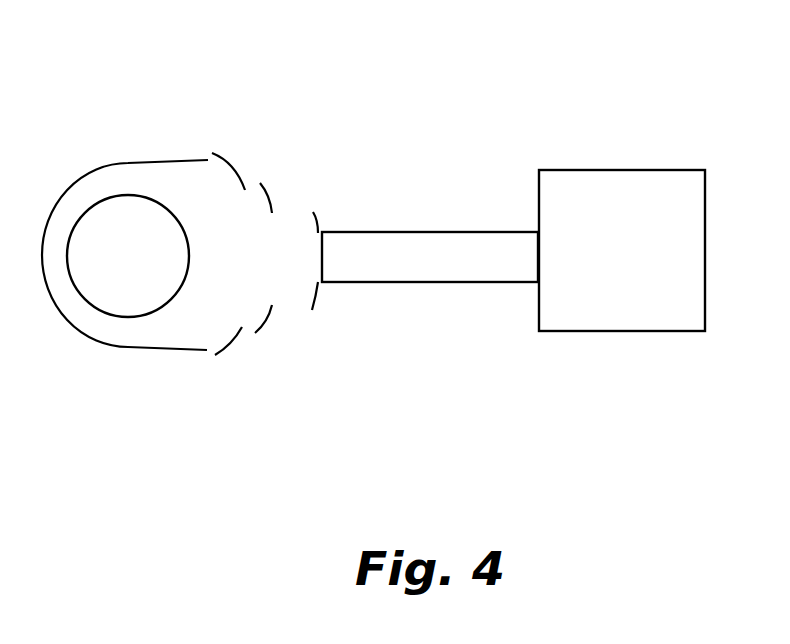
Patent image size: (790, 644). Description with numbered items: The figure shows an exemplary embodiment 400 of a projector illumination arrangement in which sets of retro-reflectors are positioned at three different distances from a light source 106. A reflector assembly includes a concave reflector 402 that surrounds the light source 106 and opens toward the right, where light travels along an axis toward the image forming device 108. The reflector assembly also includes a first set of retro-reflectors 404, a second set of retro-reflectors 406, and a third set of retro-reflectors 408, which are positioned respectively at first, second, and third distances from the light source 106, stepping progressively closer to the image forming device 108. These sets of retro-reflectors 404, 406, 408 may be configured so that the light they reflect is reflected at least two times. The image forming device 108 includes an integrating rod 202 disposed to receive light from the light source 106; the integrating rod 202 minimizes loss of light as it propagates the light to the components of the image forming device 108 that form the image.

The exemplary embodiment 400 is at (157, 66).
The concave reflector 402 is at (120, 165).
The light source 106 is at (145, 292).
The first set of retro-reflectors 404 is at (228, 165).
The second set of retro-reflectors 406 is at (266, 198).
The third set of retro-reflectors 408 is at (317, 222).
The integrating rod 202 is at (524, 269).
The image forming device 108 is at (638, 287).